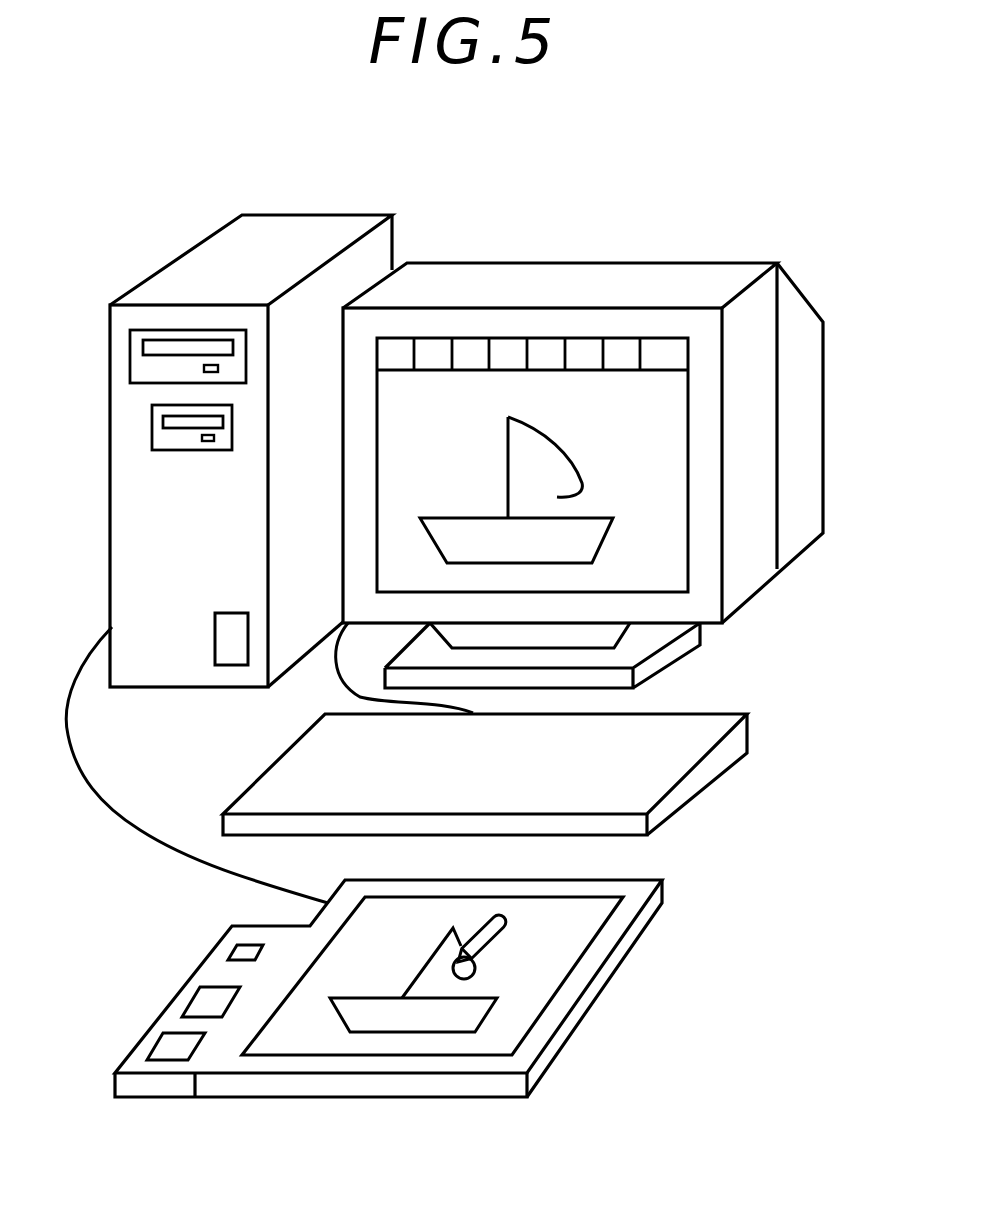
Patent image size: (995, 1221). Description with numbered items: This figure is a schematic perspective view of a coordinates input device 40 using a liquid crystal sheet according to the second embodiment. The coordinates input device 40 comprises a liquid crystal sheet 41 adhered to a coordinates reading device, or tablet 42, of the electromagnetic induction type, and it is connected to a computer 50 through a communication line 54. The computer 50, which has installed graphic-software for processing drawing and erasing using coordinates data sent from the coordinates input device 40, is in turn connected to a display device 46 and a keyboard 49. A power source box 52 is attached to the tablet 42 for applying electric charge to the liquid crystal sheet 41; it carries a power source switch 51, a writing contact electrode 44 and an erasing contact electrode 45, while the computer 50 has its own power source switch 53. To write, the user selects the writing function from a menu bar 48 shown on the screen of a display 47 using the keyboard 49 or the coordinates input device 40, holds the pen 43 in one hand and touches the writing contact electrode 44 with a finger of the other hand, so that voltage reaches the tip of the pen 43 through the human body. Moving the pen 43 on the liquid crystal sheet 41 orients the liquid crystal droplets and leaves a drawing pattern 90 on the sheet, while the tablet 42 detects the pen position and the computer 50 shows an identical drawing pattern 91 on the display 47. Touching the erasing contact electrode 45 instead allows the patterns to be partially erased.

The coordinates input device 40 is at (680, 888).
The liquid crystal sheet 41 is at (490, 1037).
The coordinates reading device (tablet) 42 is at (558, 1012).
The pen 43 is at (480, 932).
The writing contact electrode 44 is at (207, 1007).
The erasing contact electrode 45 is at (168, 1045).
The display device 46 is at (653, 280).
The display 47 is at (670, 567).
The menu bar 48 is at (672, 353).
The keyboard 49 is at (693, 742).
The computer 50 is at (300, 243).
The power source switch 51 is at (243, 950).
The power source box 52 is at (227, 977).
The power source switch 53 is at (230, 651).
The communication line 54 is at (110, 810).
The drawing pattern 90 is at (387, 1028).
The drawing pattern 91 is at (533, 425).